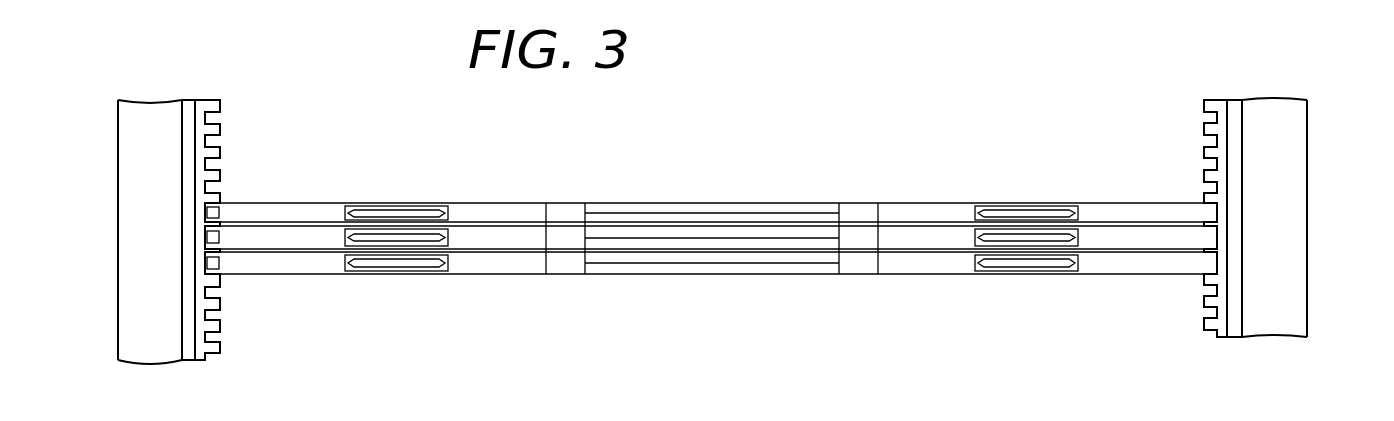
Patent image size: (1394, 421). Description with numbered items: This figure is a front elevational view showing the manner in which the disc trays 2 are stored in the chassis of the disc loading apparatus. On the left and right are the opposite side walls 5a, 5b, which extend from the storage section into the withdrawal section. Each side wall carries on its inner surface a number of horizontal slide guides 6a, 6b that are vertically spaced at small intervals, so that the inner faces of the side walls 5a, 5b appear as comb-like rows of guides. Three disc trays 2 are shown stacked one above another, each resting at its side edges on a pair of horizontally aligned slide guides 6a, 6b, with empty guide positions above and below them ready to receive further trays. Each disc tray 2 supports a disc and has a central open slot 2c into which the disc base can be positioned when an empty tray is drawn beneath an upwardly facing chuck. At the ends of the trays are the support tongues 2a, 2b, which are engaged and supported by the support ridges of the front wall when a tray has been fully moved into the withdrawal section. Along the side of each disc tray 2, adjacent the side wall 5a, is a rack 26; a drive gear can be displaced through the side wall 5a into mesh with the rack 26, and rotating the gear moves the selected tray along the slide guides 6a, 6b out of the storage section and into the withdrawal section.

The disc tray 2 is at (912, 265).
The support tongue 2a is at (402, 265).
The support tongue 2b is at (1018, 265).
The central open slot 2c is at (587, 263).
The side wall 5a is at (190, 107).
The side wall 5b is at (1233, 128).
The slide guide 6a is at (210, 343).
The slide guide 6b is at (1210, 160).
The rack 26 is at (213, 264).